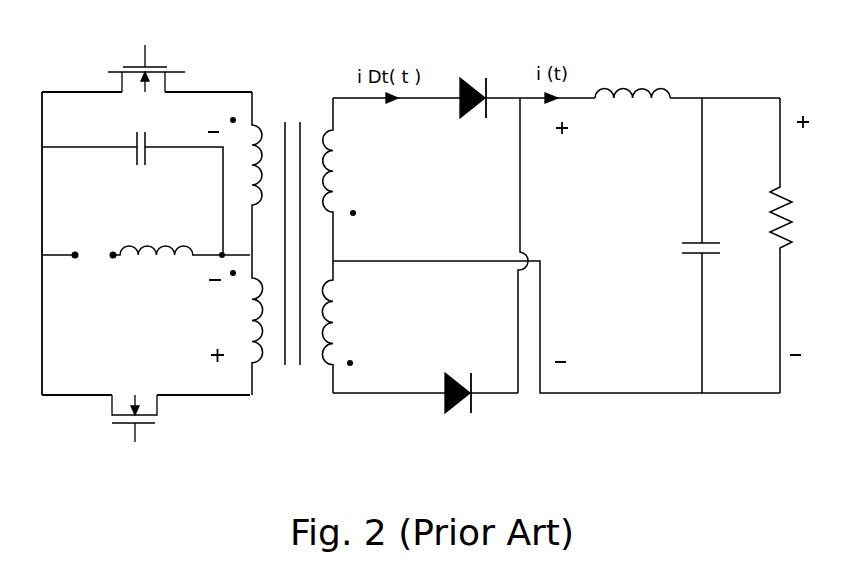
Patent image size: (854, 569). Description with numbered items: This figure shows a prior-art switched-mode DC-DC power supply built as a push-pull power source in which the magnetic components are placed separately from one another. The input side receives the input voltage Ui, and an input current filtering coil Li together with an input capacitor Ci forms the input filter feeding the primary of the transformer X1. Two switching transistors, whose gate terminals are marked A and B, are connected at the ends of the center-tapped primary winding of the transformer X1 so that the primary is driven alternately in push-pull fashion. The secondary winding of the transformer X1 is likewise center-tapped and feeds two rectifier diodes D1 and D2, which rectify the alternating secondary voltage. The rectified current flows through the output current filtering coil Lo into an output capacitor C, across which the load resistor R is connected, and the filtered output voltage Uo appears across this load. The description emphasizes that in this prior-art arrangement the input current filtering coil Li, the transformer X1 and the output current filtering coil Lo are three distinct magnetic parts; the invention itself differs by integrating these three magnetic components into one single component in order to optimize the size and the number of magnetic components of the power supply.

The upper switching transistor (MOSFET) gate terminal A is at (146, 58).
The lower switching transistor (MOSFET) gate terminal B is at (134, 430).
The input capacitor Ci is at (133, 195).
The input current filtering coil Li is at (153, 232).
The input voltage source terminals Ui is at (94, 270).
The transformer X1 is at (282, 241).
The first rectifier diode D1 is at (476, 82).
The second rectifier diode D2 is at (461, 410).
The output current filtering coil Lo is at (632, 77).
The output capacitor C is at (688, 245).
The load resistor R is at (766, 245).
The output voltage Uo is at (807, 235).